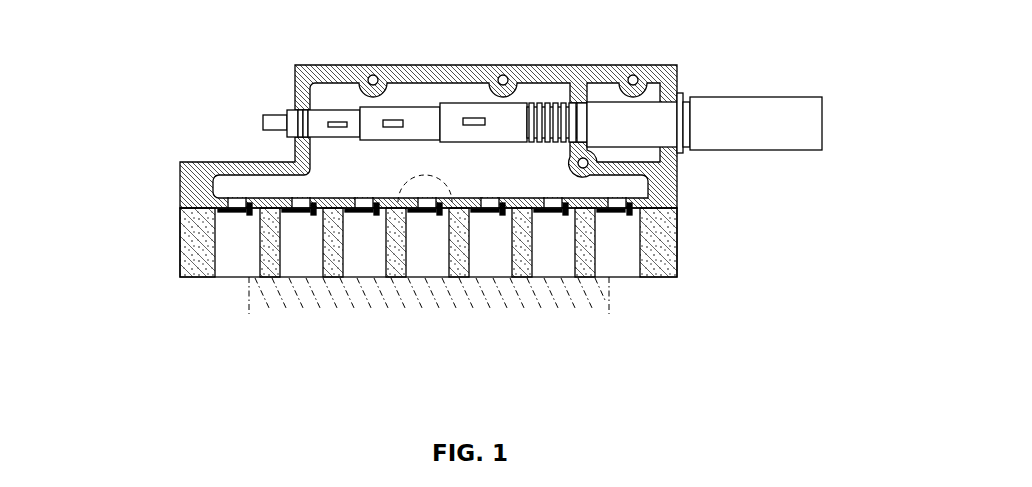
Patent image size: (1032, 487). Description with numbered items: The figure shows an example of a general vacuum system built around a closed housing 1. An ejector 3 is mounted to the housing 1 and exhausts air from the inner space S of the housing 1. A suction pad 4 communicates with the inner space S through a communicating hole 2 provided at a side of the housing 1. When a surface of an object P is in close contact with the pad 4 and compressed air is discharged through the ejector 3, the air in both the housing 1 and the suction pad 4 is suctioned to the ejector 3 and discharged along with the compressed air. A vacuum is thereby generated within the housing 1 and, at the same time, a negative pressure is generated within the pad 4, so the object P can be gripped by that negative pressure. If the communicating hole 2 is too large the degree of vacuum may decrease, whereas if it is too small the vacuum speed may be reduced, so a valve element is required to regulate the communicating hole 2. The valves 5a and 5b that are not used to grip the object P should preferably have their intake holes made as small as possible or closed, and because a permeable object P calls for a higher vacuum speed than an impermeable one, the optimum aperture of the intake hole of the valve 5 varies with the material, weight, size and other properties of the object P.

The housing 1 is at (584, 64).
The communicating hole 2 is at (362, 207).
The ejector 3 is at (461, 102).
The suction pad 4 is at (660, 277).
The valve 5 is at (419, 228).
The valve 5a is at (233, 220).
The valve 5b is at (612, 223).
The inner space S is at (484, 185).
The object P is at (273, 298).